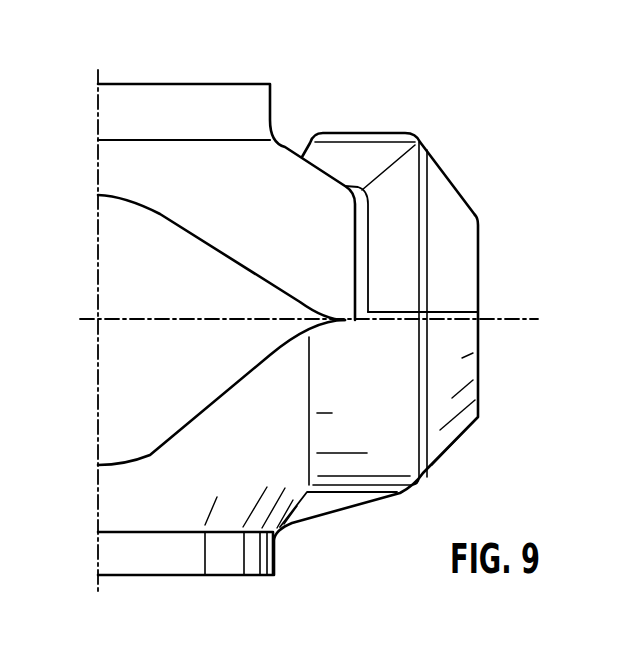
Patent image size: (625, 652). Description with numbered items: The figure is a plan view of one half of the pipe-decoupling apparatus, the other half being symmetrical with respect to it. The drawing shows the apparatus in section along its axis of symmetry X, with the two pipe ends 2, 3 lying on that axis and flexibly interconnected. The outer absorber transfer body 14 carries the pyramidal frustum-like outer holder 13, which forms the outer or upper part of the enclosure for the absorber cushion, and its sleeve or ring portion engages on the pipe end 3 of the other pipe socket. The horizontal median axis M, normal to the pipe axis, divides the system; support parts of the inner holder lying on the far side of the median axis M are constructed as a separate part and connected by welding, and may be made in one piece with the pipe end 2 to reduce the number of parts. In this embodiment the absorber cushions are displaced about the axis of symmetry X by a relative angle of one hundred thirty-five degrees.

The pipe end 2 is at (173, 83).
The pipe end 3 is at (258, 577).
The outer holder 13 is at (445, 218).
The outer absorber transfer body 14 is at (480, 283).
The axis of symmetry X is at (98, 383).
The median axis M is at (528, 322).